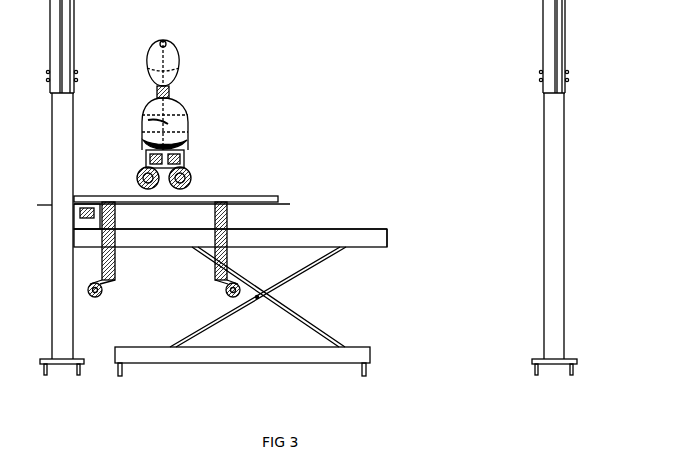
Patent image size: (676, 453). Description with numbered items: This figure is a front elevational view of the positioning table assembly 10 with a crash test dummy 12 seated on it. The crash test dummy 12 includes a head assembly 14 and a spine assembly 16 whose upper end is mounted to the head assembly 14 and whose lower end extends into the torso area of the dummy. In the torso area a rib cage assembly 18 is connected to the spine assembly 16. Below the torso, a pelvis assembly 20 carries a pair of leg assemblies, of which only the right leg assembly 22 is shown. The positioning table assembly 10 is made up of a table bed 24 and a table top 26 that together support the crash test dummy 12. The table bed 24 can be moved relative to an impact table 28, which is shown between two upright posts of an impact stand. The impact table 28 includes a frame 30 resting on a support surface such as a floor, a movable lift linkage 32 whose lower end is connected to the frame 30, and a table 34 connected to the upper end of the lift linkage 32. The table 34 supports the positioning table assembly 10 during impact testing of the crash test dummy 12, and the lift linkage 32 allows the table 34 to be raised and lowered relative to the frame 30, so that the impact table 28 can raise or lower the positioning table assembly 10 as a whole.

The positioning table assembly 10 is at (318, 72).
The crash test dummy 12 is at (187, 105).
The head assembly 14 is at (173, 53).
The spine assembly 16 is at (160, 92).
The rib cage assembly 18 is at (175, 122).
The pelvis assembly 20 is at (187, 165).
The right leg assembly 22 is at (137, 173).
The table bed 24 is at (117, 270).
The table top 26 is at (285, 202).
The impact table 28 is at (390, 228).
The frame 30 is at (240, 357).
The lift linkage 32 is at (307, 322).
The table 34 is at (317, 237).